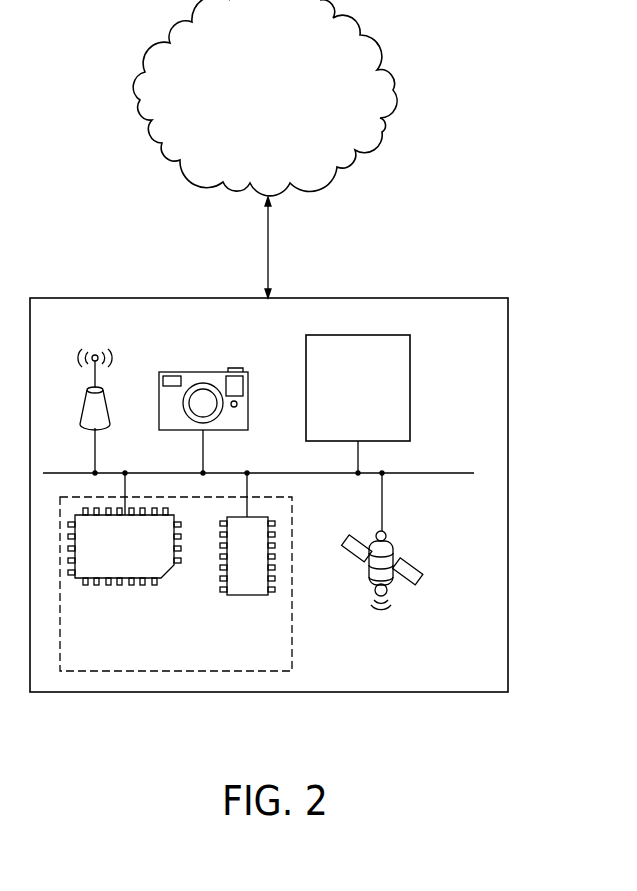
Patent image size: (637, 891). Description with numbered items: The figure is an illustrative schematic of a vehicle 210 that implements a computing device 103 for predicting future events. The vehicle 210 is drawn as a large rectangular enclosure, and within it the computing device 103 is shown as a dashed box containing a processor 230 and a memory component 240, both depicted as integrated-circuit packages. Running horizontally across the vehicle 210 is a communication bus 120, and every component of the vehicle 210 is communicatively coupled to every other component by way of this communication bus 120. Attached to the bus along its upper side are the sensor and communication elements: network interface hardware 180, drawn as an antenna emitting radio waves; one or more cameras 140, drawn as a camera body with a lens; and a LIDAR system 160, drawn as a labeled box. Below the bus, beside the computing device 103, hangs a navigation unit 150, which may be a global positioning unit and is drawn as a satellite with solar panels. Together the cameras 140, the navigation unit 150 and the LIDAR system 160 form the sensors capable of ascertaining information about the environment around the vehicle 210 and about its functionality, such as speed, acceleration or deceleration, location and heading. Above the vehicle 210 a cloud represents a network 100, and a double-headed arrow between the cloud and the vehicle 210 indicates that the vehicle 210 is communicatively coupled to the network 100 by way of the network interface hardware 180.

The network 100 is at (393, 90).
The vehicle 210 is at (101, 298).
The communication bus 120 is at (435, 473).
The network interface hardware 180 is at (106, 390).
The camera 140 is at (205, 372).
The LIDAR system 160 is at (410, 388).
The navigation unit 150 is at (355, 557).
The computing device 103 is at (292, 645).
The processor 230 is at (165, 578).
The memory component 240 is at (247, 595).